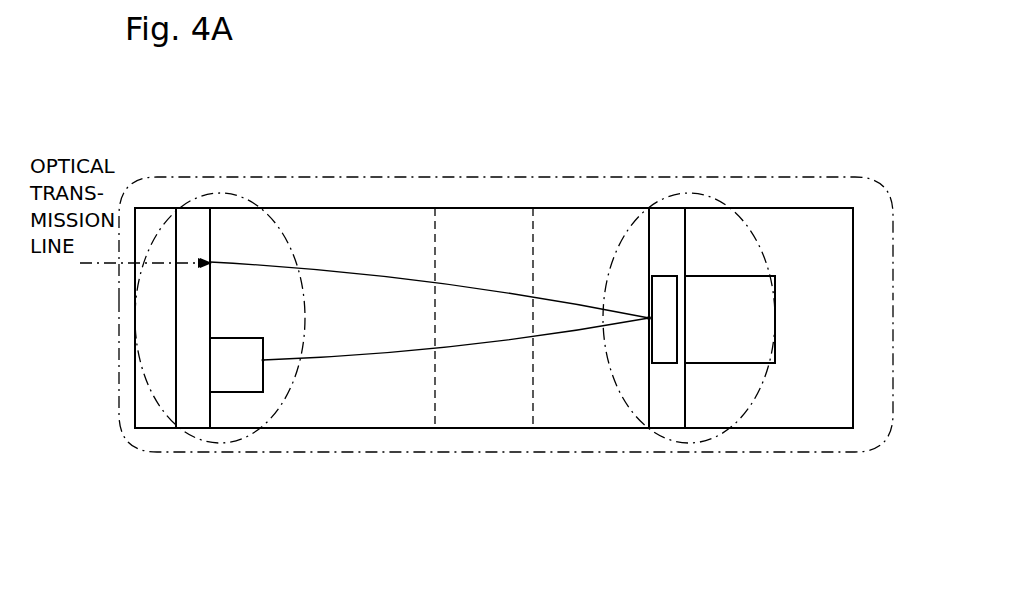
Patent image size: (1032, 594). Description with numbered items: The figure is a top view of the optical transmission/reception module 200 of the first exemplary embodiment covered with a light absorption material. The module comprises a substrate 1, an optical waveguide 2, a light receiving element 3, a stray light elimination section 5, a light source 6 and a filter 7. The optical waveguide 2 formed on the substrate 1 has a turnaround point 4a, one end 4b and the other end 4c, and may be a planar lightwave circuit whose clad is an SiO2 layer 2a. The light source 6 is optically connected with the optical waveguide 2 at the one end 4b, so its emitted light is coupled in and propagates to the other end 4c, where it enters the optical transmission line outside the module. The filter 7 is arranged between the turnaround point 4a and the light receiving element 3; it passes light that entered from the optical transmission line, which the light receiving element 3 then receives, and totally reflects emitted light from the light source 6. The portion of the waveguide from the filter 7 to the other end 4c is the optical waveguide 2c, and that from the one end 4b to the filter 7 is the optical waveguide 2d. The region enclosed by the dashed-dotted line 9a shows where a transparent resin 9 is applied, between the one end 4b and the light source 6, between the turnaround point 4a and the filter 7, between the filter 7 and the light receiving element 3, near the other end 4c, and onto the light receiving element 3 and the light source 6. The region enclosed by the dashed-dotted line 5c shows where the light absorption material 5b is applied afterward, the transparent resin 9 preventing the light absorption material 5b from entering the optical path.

The optical transmission/reception module 200 is at (645, 116).
The substrate 1 is at (718, 208).
The optical waveguide 2 is at (353, 125).
The SiO2 layer 2a is at (368, 428).
The optical waveguide 2c is at (413, 278).
The optical waveguide 2d is at (318, 352).
The light receiving element 3 is at (712, 363).
The turnaround point 4a is at (649, 318).
The one end 4b is at (263, 392).
The other end 4c is at (200, 271).
The stray light elimination section 5 is at (455, 428).
The light absorption material 5b is at (858, 193).
The dashed-dotted line 5c is at (823, 455).
The light source 6 is at (235, 392).
The filter 7 is at (663, 365).
The transparent resin 9 is at (225, 228).
The dashed-dotted line 9a is at (277, 222).